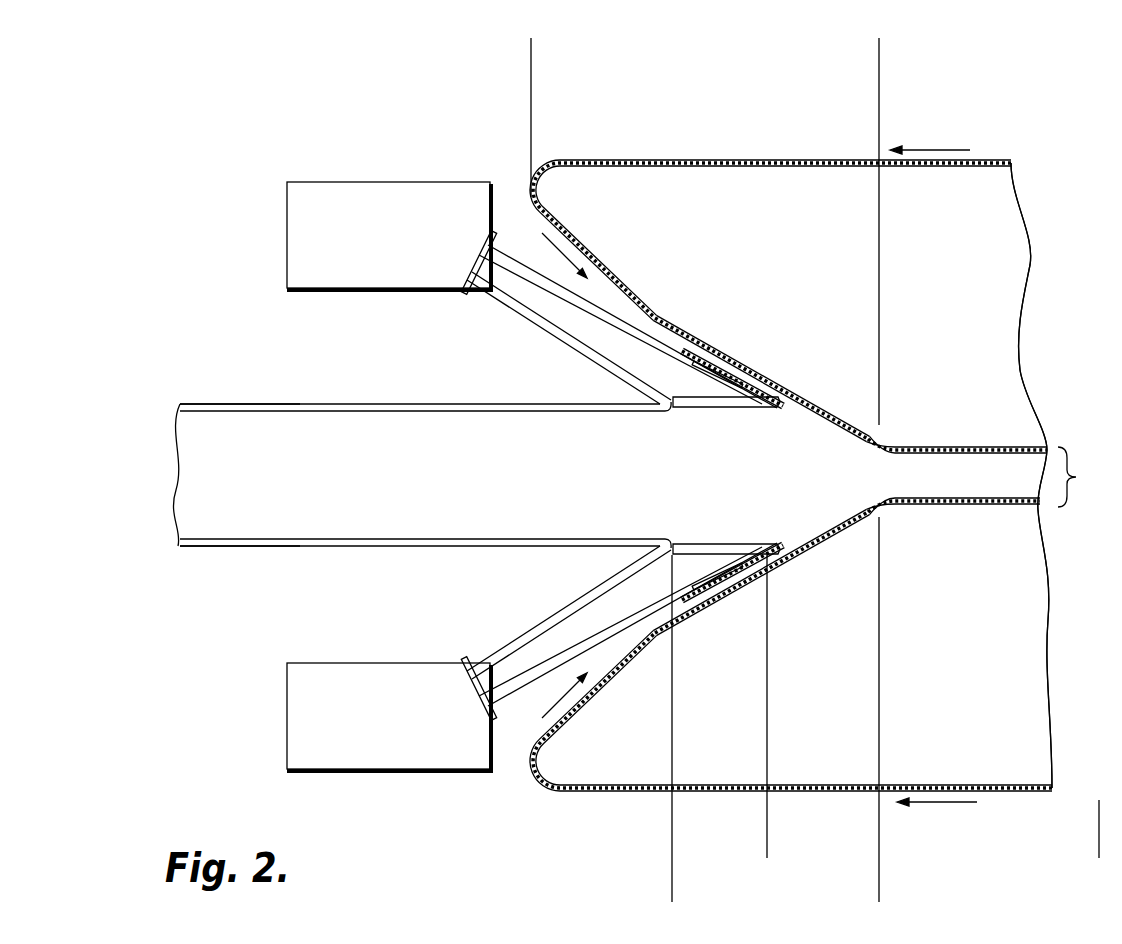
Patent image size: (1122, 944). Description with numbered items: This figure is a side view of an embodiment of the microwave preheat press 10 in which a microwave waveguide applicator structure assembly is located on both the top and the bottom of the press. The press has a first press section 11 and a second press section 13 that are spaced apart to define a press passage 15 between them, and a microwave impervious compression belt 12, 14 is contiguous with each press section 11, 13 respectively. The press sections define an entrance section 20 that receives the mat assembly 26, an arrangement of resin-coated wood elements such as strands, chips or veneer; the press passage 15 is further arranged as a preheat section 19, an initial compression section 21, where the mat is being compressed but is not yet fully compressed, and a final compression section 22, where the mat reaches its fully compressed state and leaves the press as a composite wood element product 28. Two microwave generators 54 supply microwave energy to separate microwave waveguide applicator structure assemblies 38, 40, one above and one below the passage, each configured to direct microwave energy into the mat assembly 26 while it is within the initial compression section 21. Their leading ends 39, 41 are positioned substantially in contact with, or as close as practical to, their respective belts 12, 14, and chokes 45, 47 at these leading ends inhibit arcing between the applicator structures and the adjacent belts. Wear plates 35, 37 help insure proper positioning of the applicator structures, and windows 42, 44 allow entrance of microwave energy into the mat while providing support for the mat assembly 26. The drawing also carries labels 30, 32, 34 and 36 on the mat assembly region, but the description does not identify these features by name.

The microwave preheat press 10 is at (997, 117).
The first press section 11 is at (993, 300).
The microwave impervious compression belt 12 is at (937, 167).
The second press section 13 is at (1005, 714).
The microwave impervious compression belt 14 is at (937, 784).
The press passage 15 is at (1083, 477).
The preheat section 19 is at (869, 893).
The entrance section 20 is at (869, 52).
The initial compression section 21 is at (869, 848).
The final compression section 22 is at (885, 446).
The mat assembly 26 is at (346, 493).
The composite wood element product 28 is at (990, 488).
The lower tube inlet end 30 is at (228, 539).
The upper tube wall 32 is at (255, 410).
The lower tube wall 34 is at (243, 546).
The wear plate 35 is at (683, 349).
The upper tube inlet end 36 is at (217, 405).
The wear plate 37 is at (690, 602).
The microwave waveguide applicator structure assembly 38 is at (543, 326).
The leading end 39 is at (786, 402).
The microwave waveguide applicator structure assembly 40 is at (540, 622).
The leading end 41 is at (782, 553).
The window 42 is at (702, 408).
The window 44 is at (735, 543).
The choke 45 is at (720, 371).
The choke 47 is at (737, 573).
The microwave generator 54 is at (287, 214).